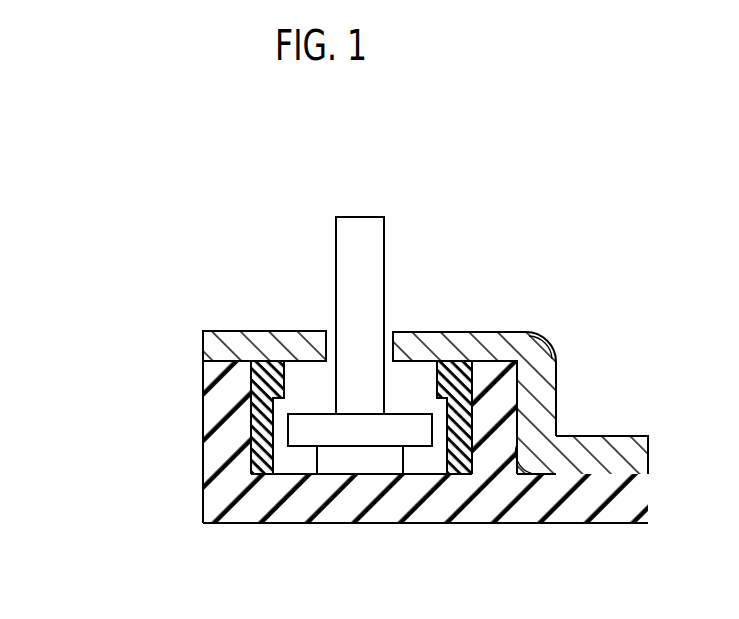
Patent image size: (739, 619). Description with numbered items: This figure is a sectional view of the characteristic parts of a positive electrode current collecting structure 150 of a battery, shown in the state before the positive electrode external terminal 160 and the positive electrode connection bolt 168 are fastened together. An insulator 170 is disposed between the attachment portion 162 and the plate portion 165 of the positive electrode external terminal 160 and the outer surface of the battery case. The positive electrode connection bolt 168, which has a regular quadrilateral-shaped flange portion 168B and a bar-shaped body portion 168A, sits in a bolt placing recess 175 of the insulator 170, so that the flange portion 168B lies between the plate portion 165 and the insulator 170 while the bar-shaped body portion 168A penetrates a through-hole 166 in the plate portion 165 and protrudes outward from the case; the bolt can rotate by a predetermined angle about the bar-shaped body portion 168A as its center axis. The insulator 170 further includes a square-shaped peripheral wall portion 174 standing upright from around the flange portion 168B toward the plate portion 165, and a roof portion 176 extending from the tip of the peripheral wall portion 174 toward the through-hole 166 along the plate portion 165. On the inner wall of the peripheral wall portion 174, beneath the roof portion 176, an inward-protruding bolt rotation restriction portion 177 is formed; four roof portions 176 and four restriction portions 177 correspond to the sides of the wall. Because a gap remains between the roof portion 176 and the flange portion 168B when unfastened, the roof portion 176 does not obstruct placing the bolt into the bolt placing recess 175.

The positive electrode current collecting structure 150 is at (118, 144).
The positive electrode external terminal 160 is at (531, 395).
The attachment portion 162 is at (610, 435).
The plate portion 165 is at (222, 330).
The through-hole 166 is at (335, 347).
The positive electrode connection bolt 168 is at (385, 293).
The bar-shaped body portion 168A is at (353, 217).
The flange portion 168B is at (351, 421).
The insulator 170 is at (371, 421).
The peripheral wall portion 174 is at (210, 373).
The bolt placing recess 175 is at (292, 454).
The roof portion 176 is at (285, 378).
The bolt rotation restriction portion 177 is at (357, 433).